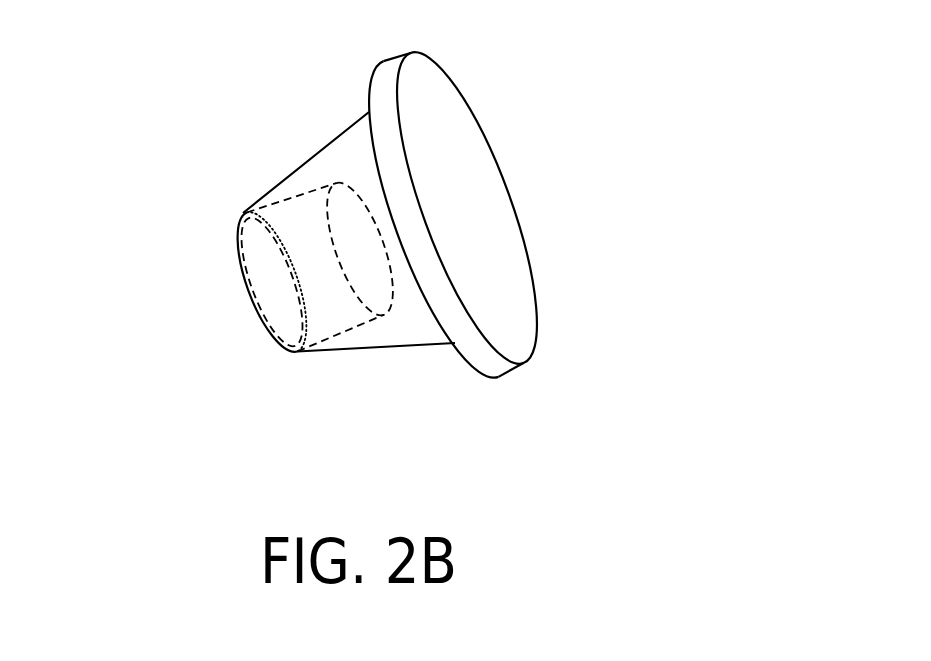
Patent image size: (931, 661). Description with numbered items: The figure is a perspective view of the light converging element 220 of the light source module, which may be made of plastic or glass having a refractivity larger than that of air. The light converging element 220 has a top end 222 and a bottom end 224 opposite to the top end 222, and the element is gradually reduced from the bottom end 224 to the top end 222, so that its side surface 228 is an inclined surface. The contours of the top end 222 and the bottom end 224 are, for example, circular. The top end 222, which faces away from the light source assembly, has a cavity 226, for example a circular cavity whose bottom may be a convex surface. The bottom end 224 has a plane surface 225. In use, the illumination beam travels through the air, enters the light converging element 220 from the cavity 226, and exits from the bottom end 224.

The light converging element 220 is at (422, 285).
The top end 222 is at (245, 270).
The bottom end 224 is at (499, 364).
The plane surface 225 is at (519, 281).
The cavity 226 is at (337, 303).
The side surface 228 is at (308, 147).